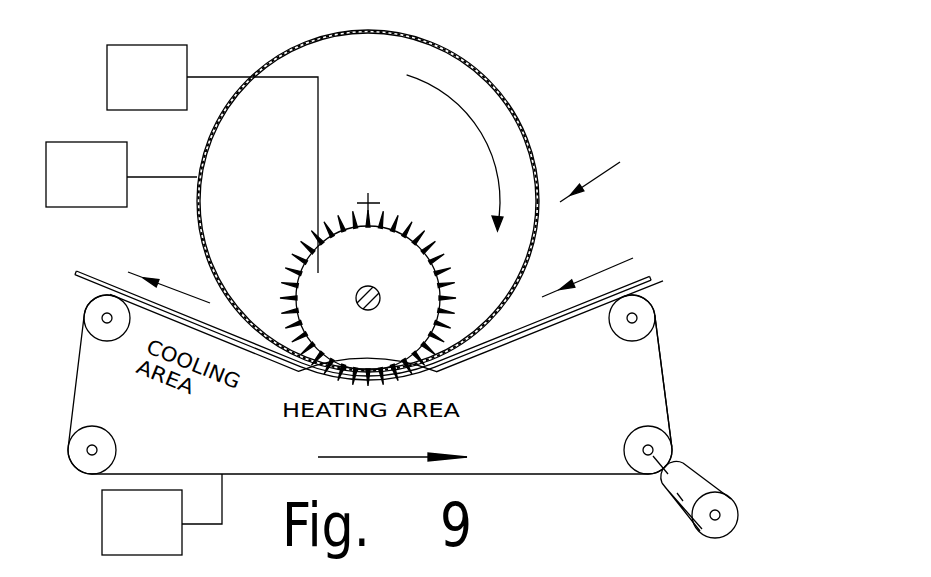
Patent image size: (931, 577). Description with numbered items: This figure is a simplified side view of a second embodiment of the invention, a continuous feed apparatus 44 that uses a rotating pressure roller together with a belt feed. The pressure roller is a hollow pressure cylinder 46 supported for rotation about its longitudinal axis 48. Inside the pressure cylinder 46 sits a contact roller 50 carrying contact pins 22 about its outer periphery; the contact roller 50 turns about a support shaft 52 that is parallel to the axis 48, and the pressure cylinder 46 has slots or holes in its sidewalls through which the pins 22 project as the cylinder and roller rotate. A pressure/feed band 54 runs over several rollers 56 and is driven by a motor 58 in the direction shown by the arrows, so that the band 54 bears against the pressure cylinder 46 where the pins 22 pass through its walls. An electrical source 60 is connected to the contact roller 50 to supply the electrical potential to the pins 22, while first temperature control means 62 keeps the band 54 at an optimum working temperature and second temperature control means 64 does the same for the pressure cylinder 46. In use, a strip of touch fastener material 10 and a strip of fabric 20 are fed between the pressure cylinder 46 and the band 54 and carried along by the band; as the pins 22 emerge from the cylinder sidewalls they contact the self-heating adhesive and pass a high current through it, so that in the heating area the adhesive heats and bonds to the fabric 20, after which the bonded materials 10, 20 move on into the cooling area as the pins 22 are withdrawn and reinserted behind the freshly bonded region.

The strip of touch fastener material 10 is at (644, 273).
The strip of fabric 20 is at (664, 285).
The contact pins 22 is at (418, 235).
The continuous feed apparatus 44 is at (613, 167).
The pressure cylinder 46 is at (513, 113).
The longitudinal axis 48 is at (378, 193).
The contact roller 50 is at (313, 307).
The support shaft 52 is at (369, 308).
The pressure/feed band 54 is at (667, 377).
The rollers 56 is at (650, 317).
The motor 58 is at (680, 497).
The electrical source 60 is at (130, 93).
The first temperature control means 62 is at (69, 190).
The second temperature control means 64 is at (125, 539).